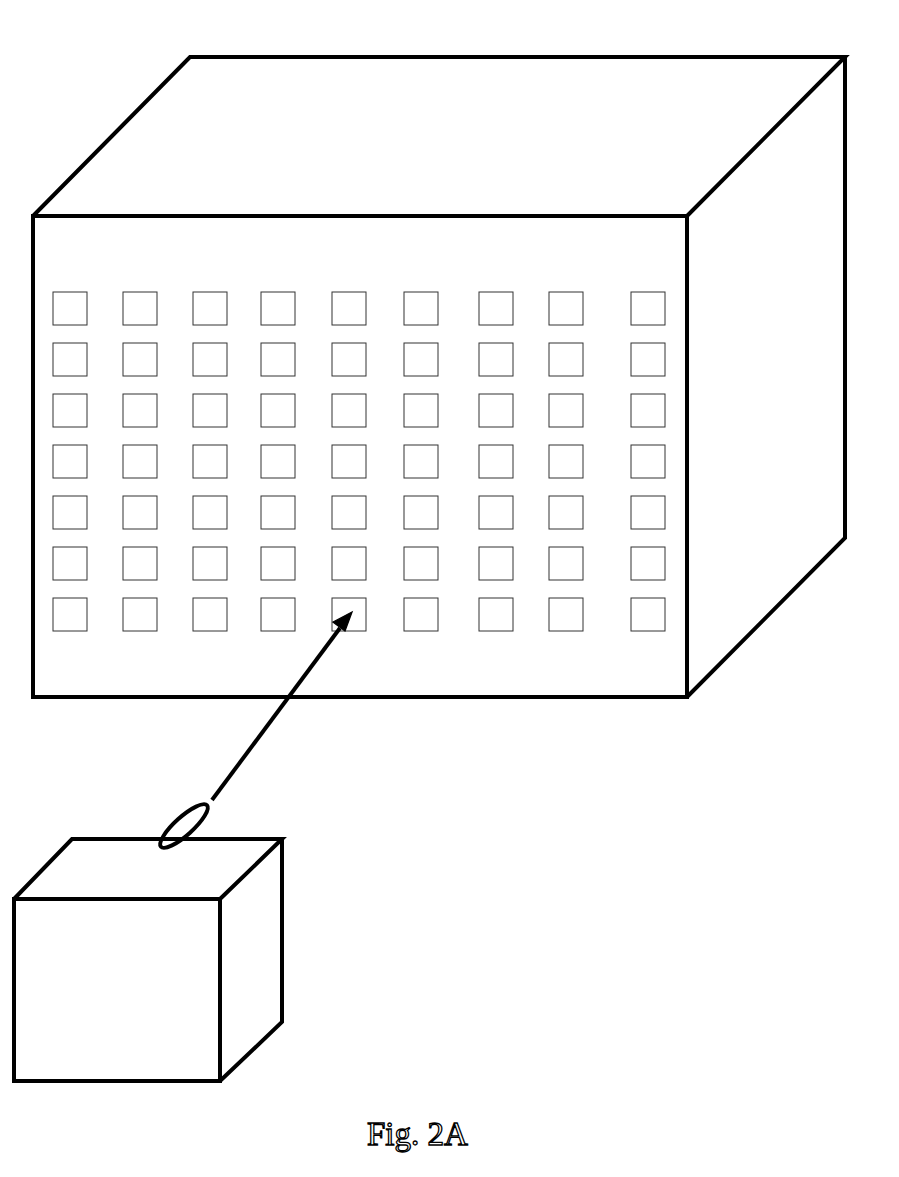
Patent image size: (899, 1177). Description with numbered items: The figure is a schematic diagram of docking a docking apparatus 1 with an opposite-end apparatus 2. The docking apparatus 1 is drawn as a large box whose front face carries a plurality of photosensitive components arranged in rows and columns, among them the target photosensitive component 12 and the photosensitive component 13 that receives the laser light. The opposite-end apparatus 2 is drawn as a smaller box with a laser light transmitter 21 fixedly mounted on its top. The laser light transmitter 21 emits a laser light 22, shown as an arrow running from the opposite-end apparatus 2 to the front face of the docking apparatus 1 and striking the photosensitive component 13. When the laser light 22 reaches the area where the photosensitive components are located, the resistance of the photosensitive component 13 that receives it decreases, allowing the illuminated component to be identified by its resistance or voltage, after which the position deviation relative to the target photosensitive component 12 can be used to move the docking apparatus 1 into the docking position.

The docking apparatus 1 is at (270, 55).
The target photosensitive component 12 is at (481, 613).
The photosensitive component that receives the laser light 13 is at (335, 620).
The opposite-end apparatus 2 is at (69, 838).
The laser light transmitter 21 is at (172, 827).
The laser light 22 is at (242, 757).